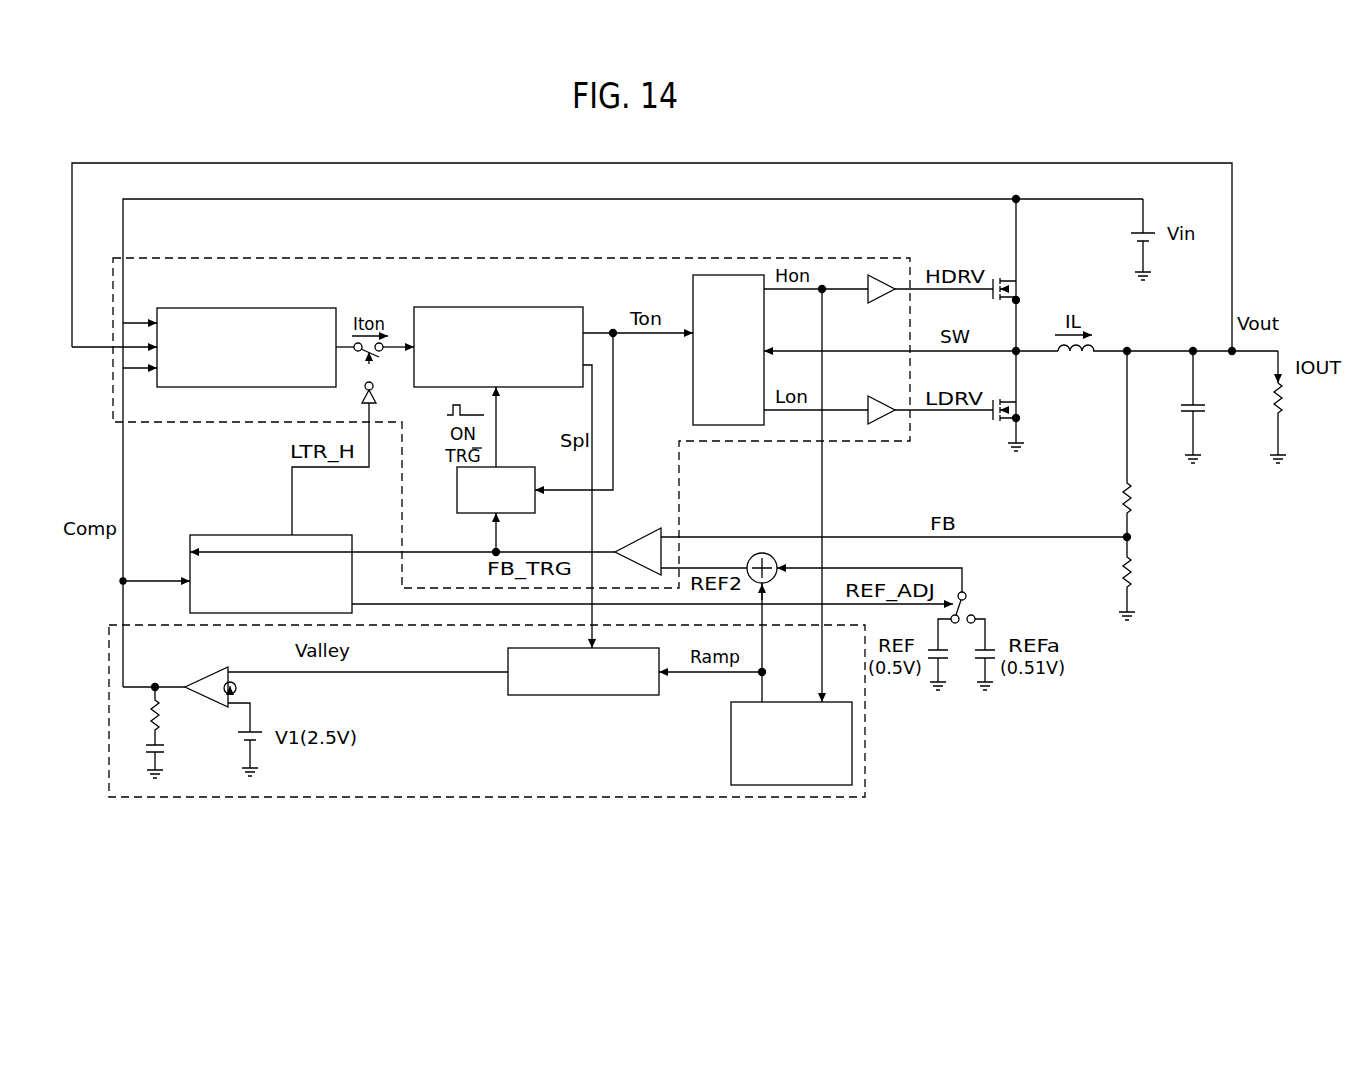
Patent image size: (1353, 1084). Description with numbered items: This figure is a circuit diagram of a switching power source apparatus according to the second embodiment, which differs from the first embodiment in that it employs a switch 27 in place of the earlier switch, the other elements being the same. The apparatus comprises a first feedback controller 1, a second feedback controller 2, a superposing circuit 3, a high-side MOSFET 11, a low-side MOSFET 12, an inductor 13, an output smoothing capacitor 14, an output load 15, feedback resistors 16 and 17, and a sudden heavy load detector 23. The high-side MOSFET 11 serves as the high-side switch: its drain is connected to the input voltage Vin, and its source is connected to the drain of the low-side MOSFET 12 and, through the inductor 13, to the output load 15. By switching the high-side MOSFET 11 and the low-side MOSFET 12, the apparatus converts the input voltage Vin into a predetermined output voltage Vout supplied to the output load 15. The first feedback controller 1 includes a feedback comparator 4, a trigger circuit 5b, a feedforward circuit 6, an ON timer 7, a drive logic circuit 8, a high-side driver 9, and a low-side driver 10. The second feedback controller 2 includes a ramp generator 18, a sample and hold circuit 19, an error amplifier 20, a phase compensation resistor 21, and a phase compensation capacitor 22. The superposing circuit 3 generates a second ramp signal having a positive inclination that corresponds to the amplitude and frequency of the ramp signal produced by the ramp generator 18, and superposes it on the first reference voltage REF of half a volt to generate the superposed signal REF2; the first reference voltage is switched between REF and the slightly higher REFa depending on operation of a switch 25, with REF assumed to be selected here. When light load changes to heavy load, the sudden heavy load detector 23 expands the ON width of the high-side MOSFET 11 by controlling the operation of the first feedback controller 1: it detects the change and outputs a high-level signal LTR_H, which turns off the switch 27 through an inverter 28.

The first feedback controller 1 is at (310, 258).
The second feedback controller 2 is at (109, 714).
The superposing circuit 3 is at (766, 552).
The feedback comparator 4 is at (642, 532).
The trigger circuit 5b is at (457, 494).
The feedforward circuit 6 is at (258, 308).
The ON timer 7 is at (523, 388).
The drive logic circuit 8 is at (693, 400).
The high-side driver 9 is at (880, 305).
The low-side driver 10 is at (884, 396).
The high-side MOSFET 11 is at (1020, 286).
The low-side MOSFET 12 is at (1023, 412).
The inductor 13 is at (1068, 357).
The output smoothing capacitor 14 is at (1190, 402).
The output load 15 is at (1285, 415).
The feedback resistor 16 is at (1117, 497).
The feedback resistor 17 is at (1117, 569).
The ramp generator 18 is at (731, 736).
The sample and hold circuit 19 is at (581, 695).
The error amplifier 20 is at (208, 672).
The phase compensation resistor 21 is at (165, 716).
The phase compensation capacitor 22 is at (168, 751).
The sudden heavy load detector 23 is at (336, 535).
The switch 25 is at (972, 607).
The switch 27 is at (352, 378).
The inverter 28 is at (375, 387).